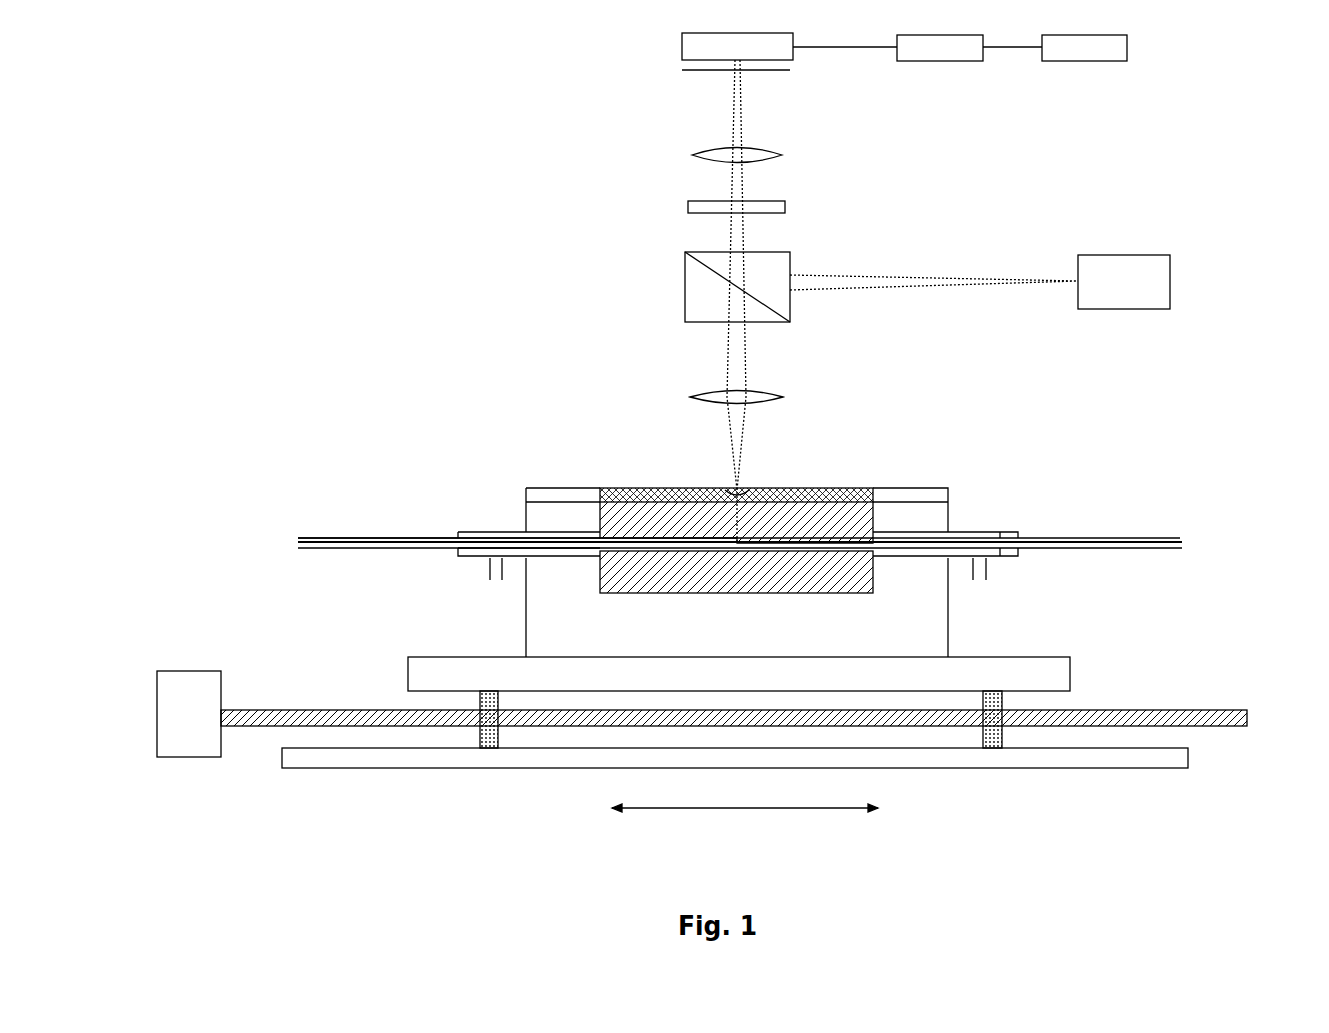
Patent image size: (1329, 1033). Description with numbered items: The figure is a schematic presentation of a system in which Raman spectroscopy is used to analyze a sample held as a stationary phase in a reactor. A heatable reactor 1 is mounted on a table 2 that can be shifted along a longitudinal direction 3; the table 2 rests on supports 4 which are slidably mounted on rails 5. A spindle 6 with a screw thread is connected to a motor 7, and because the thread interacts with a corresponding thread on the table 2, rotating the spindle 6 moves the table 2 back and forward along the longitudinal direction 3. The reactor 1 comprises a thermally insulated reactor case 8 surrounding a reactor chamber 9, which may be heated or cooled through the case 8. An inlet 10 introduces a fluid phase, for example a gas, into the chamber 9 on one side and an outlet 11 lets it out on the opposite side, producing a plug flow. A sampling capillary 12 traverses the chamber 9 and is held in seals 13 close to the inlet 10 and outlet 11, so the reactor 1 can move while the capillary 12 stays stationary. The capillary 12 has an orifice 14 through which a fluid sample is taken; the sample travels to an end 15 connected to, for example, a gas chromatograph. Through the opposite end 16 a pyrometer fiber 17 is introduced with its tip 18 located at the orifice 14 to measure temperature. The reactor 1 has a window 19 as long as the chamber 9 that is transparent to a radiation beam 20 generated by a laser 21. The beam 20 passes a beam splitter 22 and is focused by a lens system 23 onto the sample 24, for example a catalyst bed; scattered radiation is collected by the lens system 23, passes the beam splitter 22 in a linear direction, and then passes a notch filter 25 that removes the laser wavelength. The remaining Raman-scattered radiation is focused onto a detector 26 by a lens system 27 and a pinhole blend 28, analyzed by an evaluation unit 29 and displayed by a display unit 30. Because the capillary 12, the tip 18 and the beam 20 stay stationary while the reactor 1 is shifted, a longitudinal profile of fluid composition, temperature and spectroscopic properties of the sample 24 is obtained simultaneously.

The heatable reactor 1 is at (588, 488).
The table 2 is at (405, 660).
The longitudinal direction 3 is at (725, 810).
The supports 4 is at (480, 700).
The rails 5 is at (333, 760).
The spindle 6 is at (290, 712).
The motor 7 is at (205, 683).
The reactor case 8 is at (555, 640).
The reactor chamber 9 is at (600, 566).
The inlet 10 is at (488, 562).
The outlet 11 is at (988, 566).
The sampling capillary 12 is at (390, 537).
The seals 13 is at (462, 532).
The orifice 14 is at (792, 490).
The end of sampling capillary 15 is at (298, 540).
The opposite end of sampling capillary 16 is at (1183, 540).
The pyrometer fiber 17 is at (1183, 545).
The tip 18 is at (830, 490).
The window 19 is at (753, 490).
The radiation beam 20 is at (748, 367).
The laser 21 is at (1128, 309).
The beam splitter 22 is at (780, 270).
The lens system 23 is at (760, 393).
The sample 24 is at (712, 490).
The notch filter 25 is at (785, 204).
The detector 26 is at (682, 57).
The lens system 27 is at (768, 153).
The pinhole blend 28 is at (790, 71).
The evaluation unit 29 is at (955, 61).
The display unit 30 is at (1100, 61).